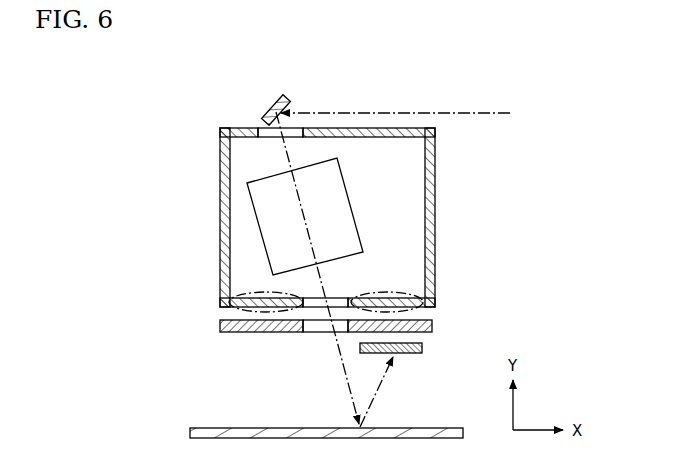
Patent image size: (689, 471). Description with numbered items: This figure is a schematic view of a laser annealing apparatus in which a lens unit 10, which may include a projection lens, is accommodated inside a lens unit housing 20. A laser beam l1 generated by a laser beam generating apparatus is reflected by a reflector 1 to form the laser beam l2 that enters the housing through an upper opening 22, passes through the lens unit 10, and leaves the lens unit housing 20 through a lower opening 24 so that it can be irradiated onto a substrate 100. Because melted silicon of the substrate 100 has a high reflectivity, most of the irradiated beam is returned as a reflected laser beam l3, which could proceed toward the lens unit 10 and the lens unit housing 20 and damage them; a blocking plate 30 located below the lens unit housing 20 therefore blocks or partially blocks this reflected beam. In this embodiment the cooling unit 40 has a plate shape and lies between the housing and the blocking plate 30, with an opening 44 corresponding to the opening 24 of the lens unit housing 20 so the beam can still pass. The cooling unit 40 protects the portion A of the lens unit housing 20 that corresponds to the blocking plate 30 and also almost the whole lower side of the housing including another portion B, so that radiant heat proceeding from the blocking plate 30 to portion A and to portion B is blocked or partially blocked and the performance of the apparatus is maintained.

The reflector 1 is at (274, 105).
The opening 22 is at (256, 122).
The lens unit housing 20 is at (221, 186).
The lens unit 10 is at (267, 230).
The opening 24 is at (309, 293).
The other portion B is at (232, 309).
The portion A is at (390, 290).
The cooling unit 40 is at (434, 326).
The opening 44 is at (316, 338).
The blocking plate 30 is at (424, 349).
The substrate 100 is at (196, 431).
The reference line l1 is at (465, 112).
The reference line l2 is at (305, 232).
The reflected light path l3 is at (379, 390).